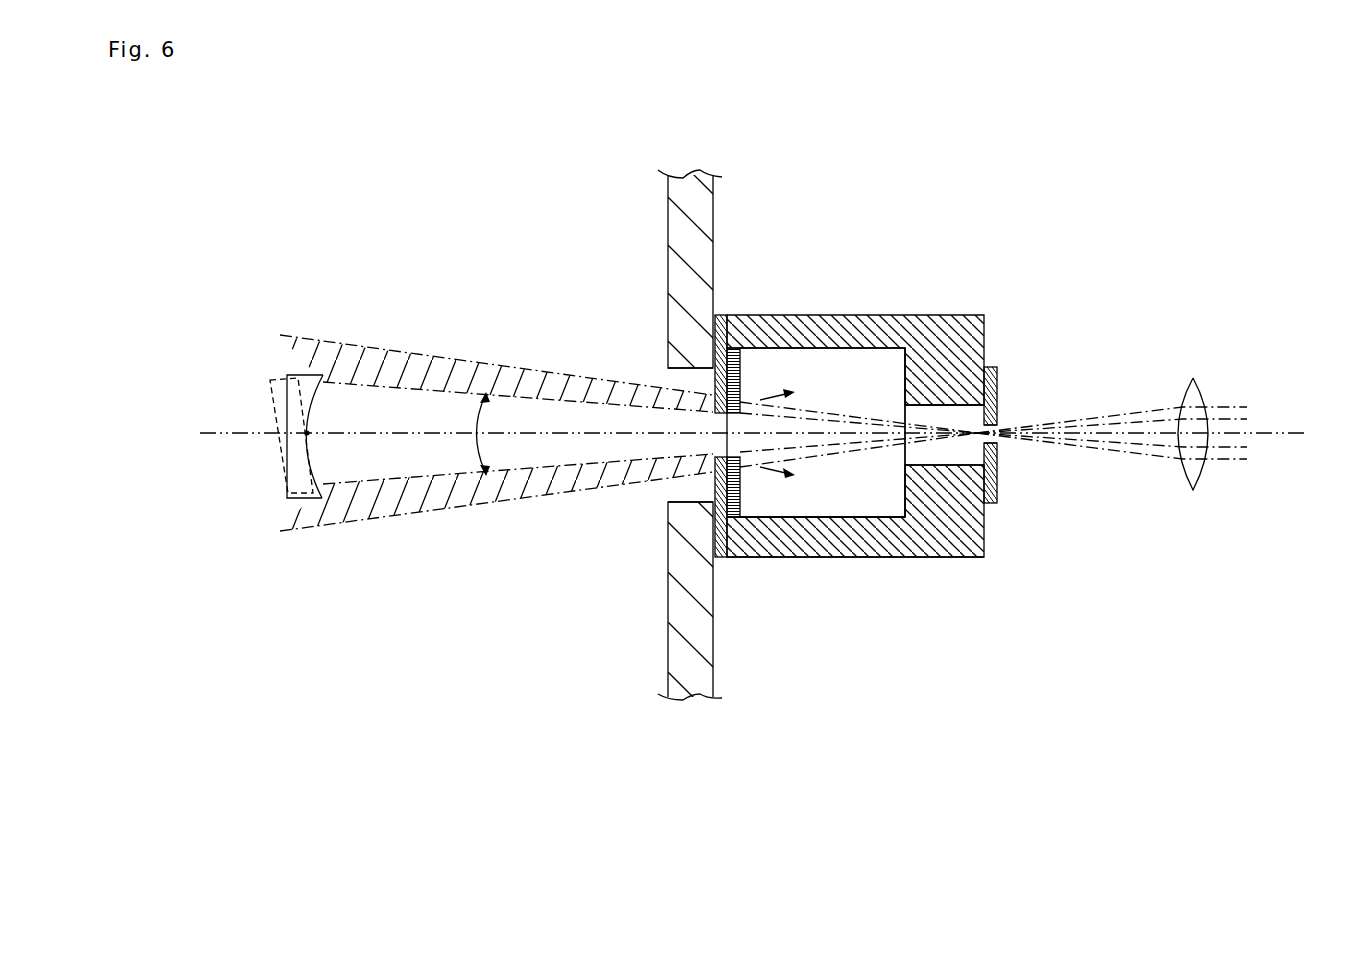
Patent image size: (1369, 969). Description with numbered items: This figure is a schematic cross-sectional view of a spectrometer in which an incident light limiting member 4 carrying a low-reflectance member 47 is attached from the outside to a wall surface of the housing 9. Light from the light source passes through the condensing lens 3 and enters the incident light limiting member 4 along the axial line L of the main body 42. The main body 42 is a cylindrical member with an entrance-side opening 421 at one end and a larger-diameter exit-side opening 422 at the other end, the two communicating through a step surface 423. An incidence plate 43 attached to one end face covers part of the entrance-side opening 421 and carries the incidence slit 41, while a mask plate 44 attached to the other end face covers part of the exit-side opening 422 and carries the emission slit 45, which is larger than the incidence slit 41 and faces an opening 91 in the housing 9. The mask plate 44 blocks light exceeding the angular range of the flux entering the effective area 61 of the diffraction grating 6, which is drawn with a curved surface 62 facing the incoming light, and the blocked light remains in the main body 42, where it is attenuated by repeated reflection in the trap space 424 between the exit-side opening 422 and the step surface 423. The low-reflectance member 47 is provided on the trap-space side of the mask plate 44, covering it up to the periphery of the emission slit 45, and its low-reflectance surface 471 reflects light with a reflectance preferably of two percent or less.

The condensing lens 3 is at (1191, 385).
The incident light limiting member 4 is at (903, 431).
The incidence slit 41 is at (1006, 443).
The main body 42 is at (840, 313).
The entrance-side opening 421 is at (972, 460).
The exit-side opening 422 is at (752, 510).
The step surface 423 is at (905, 497).
The trap space 424 is at (810, 502).
The incidence plate 43 is at (1000, 383).
The mask plate 44 is at (713, 383).
The emission slit 45 is at (713, 455).
The low-reflectance member 47 is at (729, 325).
The low-reflectance surface 471 is at (743, 380).
The diffraction grating 6 is at (280, 426).
The effective area 61 is at (325, 473).
The concave surface of lens 62 is at (308, 433).
The housing 9 is at (668, 220).
The opening 91 is at (713, 527).
The axial line L is at (1282, 433).